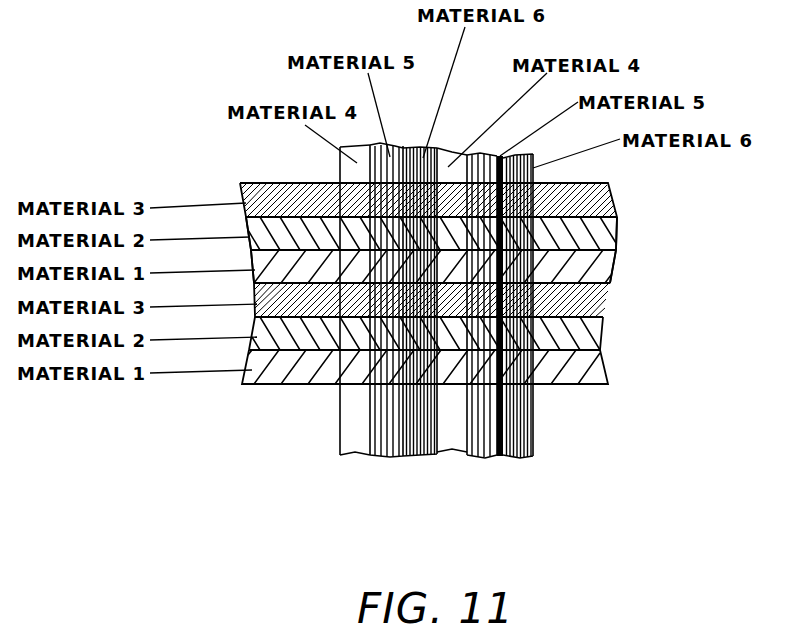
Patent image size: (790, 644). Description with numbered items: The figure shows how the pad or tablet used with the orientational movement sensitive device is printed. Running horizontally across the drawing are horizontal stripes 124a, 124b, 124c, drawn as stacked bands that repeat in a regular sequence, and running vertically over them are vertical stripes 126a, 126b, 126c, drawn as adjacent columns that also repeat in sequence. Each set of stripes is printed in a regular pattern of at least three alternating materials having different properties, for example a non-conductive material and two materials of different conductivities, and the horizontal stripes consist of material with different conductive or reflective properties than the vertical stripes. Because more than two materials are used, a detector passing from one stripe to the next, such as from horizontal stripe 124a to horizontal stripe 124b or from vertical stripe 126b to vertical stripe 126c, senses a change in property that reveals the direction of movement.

The horizontal stripe 124a is at (598, 267).
The horizontal stripe 124b is at (605, 233).
The horizontal stripe 124c is at (610, 203).
The vertical stripe 126a is at (348, 430).
The vertical stripe 126b is at (392, 437).
The vertical stripe 126c is at (413, 437).